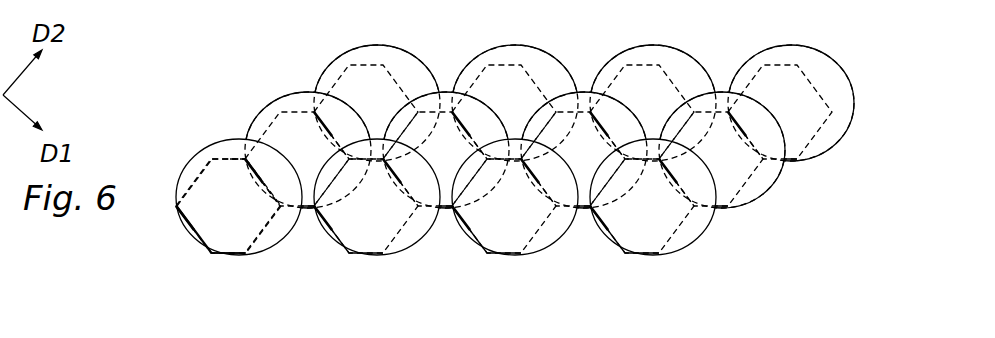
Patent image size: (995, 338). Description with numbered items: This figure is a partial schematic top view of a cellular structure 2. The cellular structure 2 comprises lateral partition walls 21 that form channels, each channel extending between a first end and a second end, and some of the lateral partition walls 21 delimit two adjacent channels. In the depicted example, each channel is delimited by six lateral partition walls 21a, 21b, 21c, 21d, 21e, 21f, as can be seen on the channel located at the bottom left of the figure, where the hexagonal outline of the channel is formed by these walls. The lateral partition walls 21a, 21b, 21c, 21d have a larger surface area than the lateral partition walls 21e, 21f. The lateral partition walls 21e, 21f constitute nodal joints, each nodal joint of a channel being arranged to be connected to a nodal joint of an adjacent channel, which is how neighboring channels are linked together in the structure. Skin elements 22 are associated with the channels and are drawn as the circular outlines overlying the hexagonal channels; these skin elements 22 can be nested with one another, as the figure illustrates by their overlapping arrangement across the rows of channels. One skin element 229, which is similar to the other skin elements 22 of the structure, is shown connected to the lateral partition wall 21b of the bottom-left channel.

The cellular structure 2 is at (228, 48).
The lateral partition walls 21 is at (405, 240).
The lateral partition wall 21a is at (262, 232).
The lateral partition wall 21b is at (187, 222).
The lateral partition wall 21c is at (201, 172).
The lateral partition wall 21d is at (272, 198).
The lateral partition wall 21e is at (228, 158).
The lateral partition wall 21f is at (223, 255).
The skin elements 22 is at (293, 90).
The skin element 229 is at (244, 158).